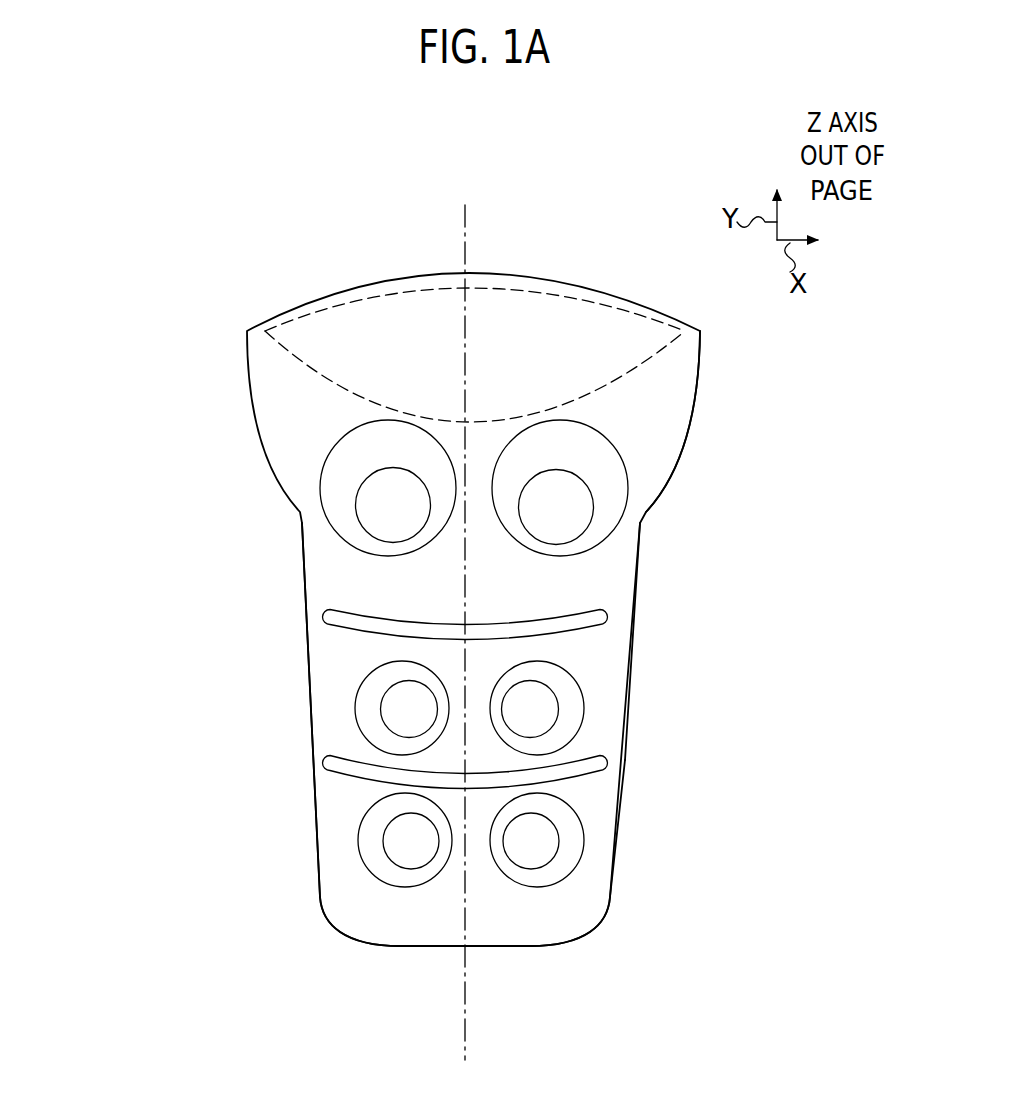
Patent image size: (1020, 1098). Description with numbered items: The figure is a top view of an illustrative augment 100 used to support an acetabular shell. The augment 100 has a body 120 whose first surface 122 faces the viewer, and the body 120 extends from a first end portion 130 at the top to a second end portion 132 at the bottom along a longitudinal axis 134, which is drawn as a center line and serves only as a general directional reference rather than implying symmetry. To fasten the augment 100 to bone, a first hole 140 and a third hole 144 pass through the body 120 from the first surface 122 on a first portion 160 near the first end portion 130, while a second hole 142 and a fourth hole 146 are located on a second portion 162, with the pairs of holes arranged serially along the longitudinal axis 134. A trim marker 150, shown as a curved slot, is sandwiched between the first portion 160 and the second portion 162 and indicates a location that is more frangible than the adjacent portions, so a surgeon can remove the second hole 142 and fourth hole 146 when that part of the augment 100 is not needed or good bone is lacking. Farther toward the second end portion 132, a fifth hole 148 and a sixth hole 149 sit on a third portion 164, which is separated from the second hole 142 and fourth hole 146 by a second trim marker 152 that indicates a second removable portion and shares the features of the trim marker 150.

The augment 100 is at (162, 157).
The body 120 is at (300, 650).
The first surface 122 is at (345, 592).
The first end portion 130 is at (222, 328).
The second end portion 132 is at (316, 922).
The longitudinal axis 134 is at (467, 975).
The first hole 140 is at (395, 510).
The second hole 142 is at (413, 703).
The third hole 144 is at (550, 510).
The fourth hole 146 is at (537, 703).
The fifth hole 148 is at (537, 847).
The sixth hole 149 is at (413, 847).
The trim marker 150 is at (547, 628).
The second trim marker 152 is at (568, 767).
The first portion 160 is at (645, 421).
The second portion 162 is at (592, 658).
The third portion 164 is at (592, 803).